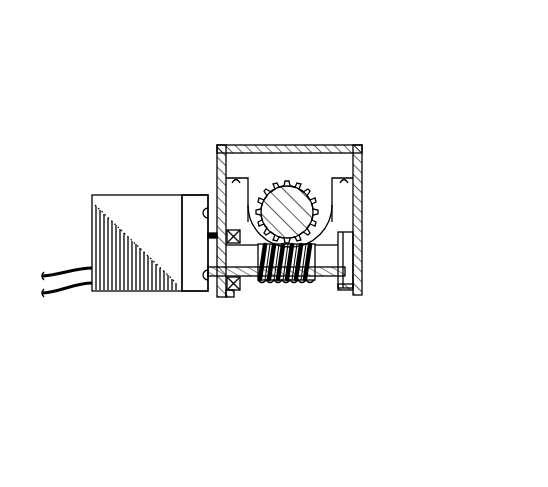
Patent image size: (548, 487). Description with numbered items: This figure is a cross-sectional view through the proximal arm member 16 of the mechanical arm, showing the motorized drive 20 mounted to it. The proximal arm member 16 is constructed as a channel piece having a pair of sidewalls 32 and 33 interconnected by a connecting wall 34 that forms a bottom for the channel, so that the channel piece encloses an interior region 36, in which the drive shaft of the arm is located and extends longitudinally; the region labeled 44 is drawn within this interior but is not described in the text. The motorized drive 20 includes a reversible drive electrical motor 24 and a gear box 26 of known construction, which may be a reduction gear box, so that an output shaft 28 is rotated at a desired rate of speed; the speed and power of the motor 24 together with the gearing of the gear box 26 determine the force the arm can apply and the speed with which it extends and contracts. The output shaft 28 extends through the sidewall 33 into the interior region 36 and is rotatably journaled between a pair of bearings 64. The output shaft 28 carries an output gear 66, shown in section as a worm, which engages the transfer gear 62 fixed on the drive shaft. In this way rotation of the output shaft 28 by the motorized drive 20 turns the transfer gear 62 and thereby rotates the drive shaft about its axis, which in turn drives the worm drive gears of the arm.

The motorized drive 20 is at (133, 98).
The reversible drive electrical motor 24 is at (158, 231).
The gear box 26 is at (190, 288).
The proximal arm member 16 is at (363, 160).
The sidewall 33 is at (217, 177).
The connecting wall 34 is at (285, 158).
The sidewall 32 is at (362, 231).
The interior region 36 is at (315, 150).
The gear chamber 44 is at (265, 163).
The transfer gear 62 is at (335, 193).
The output shaft 28 is at (327, 268).
The output gear 66 is at (282, 282).
The bearings 64 is at (237, 292).